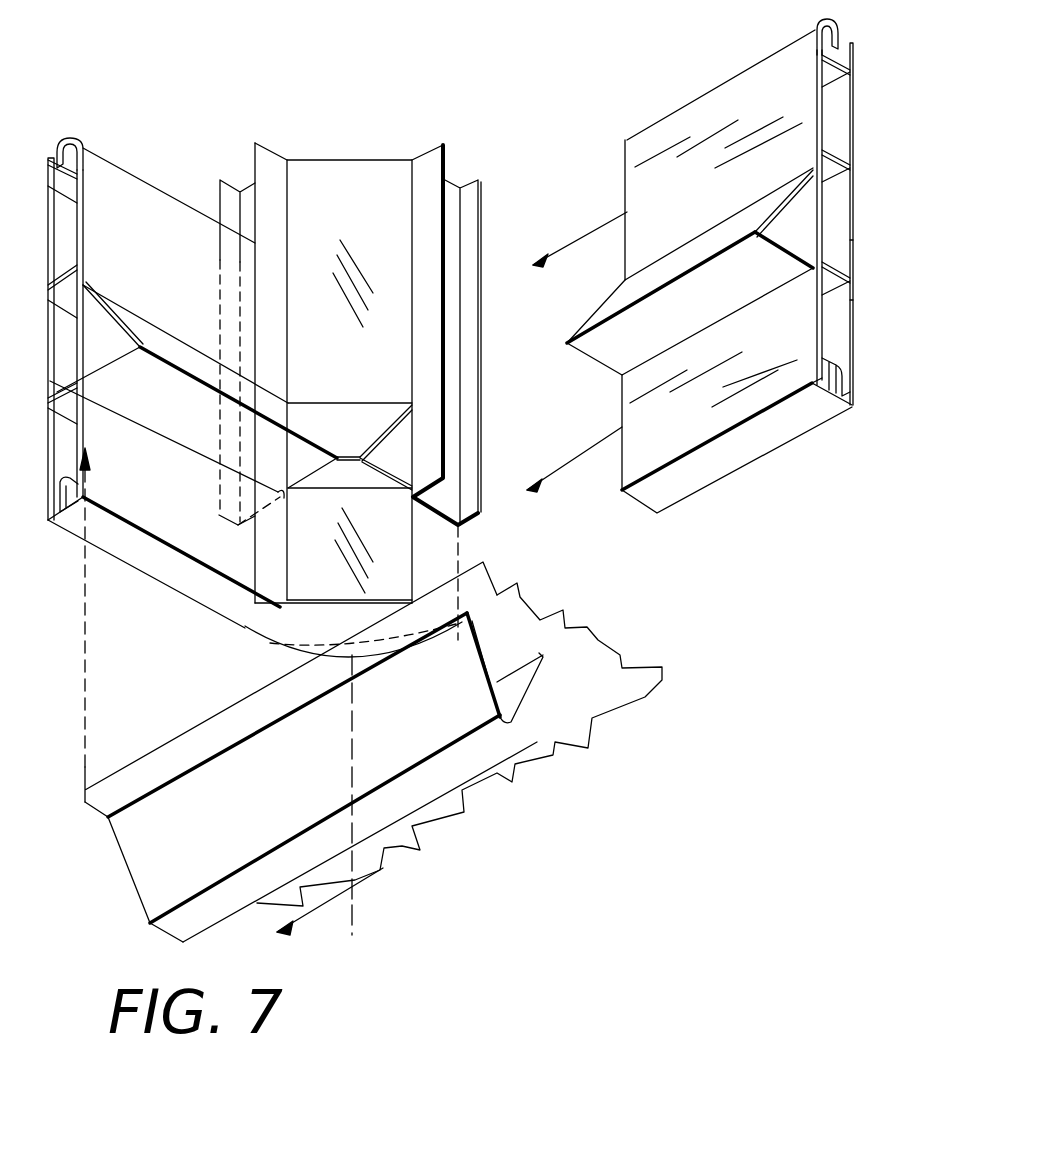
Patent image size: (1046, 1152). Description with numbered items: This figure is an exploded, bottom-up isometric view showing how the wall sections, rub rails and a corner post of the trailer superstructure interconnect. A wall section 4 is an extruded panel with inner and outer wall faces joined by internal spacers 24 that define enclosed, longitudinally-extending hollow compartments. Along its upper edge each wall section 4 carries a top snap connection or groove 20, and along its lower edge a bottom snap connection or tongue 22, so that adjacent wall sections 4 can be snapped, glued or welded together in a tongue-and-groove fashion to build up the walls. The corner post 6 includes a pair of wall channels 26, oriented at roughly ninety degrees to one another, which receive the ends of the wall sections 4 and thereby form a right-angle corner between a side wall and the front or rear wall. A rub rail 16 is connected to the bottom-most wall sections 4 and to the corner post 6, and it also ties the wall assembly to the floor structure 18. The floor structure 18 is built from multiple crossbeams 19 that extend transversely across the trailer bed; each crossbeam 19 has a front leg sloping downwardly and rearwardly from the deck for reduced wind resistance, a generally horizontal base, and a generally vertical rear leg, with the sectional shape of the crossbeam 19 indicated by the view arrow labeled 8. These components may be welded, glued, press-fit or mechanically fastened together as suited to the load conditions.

The wall section 4 is at (740, 97).
The corner post 6 is at (366, 210).
The section view direction of FIG. 8 is at (231, 697).
The rub rail 16 is at (348, 420).
The floor structure 18 is at (601, 700).
The crossbeam 19 is at (300, 811).
The top snap connection or groove 20 is at (853, 45).
The bottom snap connection or tongue 22 is at (853, 382).
The internal spacer 24 is at (852, 262).
The wall channel 26 is at (452, 182).